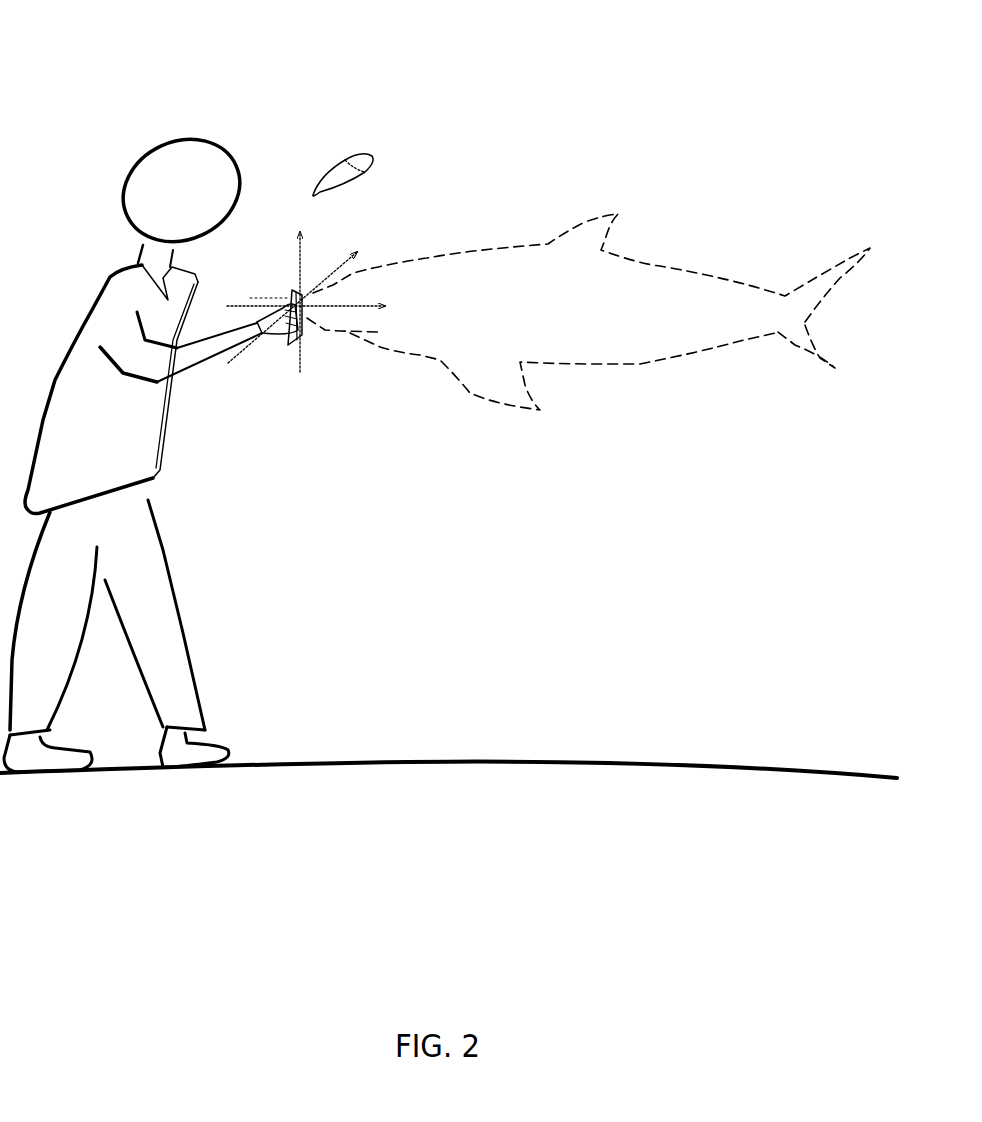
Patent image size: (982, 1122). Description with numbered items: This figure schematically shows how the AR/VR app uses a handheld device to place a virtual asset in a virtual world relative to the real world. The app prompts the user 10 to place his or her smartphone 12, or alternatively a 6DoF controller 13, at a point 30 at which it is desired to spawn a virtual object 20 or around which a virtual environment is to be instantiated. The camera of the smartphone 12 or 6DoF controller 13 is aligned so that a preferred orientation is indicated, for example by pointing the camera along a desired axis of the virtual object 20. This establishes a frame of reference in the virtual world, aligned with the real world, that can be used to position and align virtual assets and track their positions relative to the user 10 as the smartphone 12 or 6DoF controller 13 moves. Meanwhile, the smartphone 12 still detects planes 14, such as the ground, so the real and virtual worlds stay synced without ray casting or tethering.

The user 10 is at (237, 140).
The smartphone 12 is at (310, 278).
The 6DoF controller 13 is at (373, 145).
The planes 14 is at (768, 755).
The virtual object 20 is at (703, 262).
The point 30 is at (312, 338).